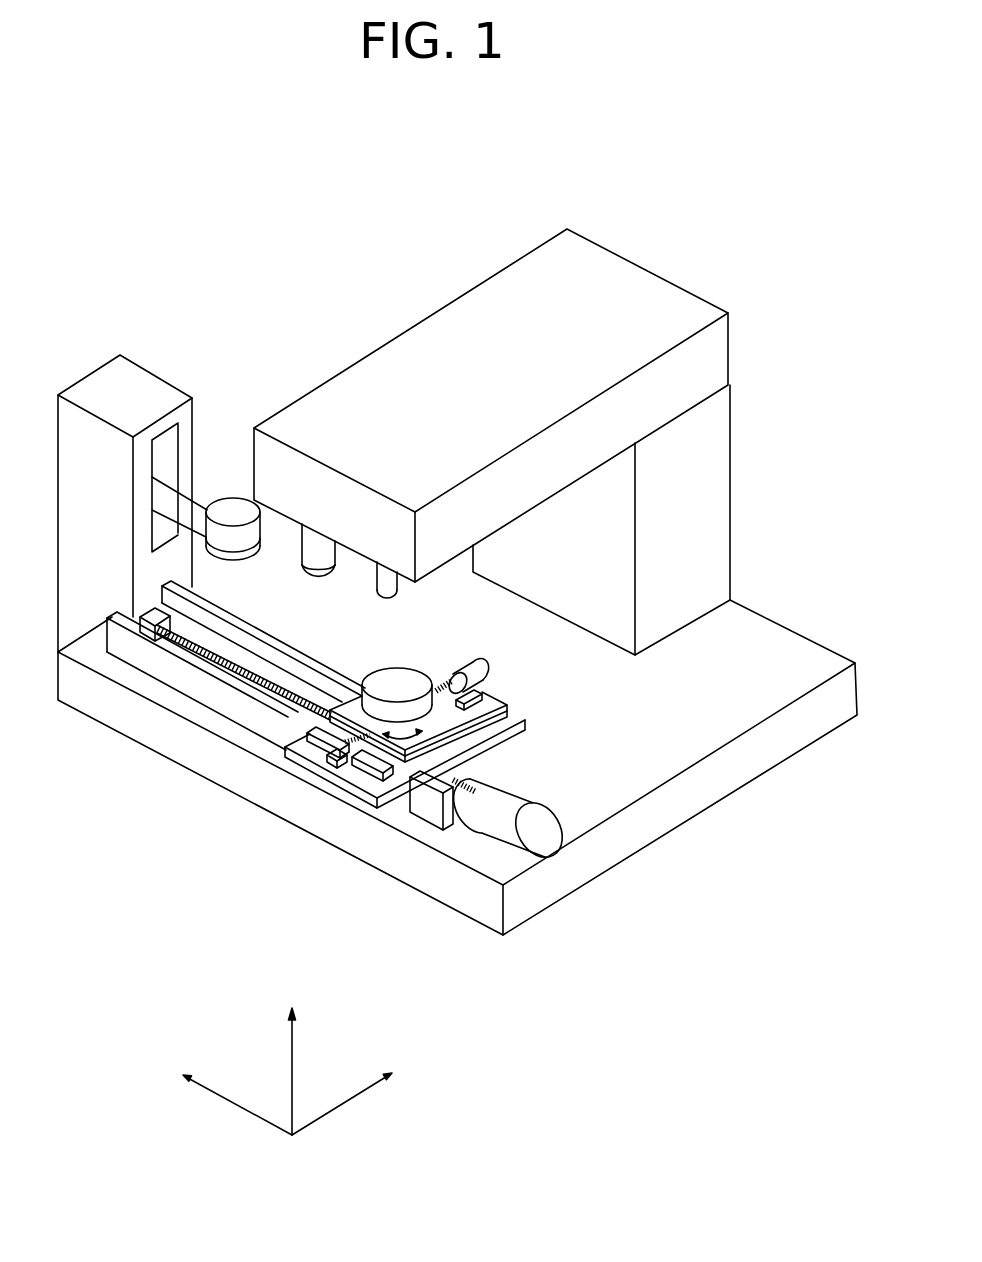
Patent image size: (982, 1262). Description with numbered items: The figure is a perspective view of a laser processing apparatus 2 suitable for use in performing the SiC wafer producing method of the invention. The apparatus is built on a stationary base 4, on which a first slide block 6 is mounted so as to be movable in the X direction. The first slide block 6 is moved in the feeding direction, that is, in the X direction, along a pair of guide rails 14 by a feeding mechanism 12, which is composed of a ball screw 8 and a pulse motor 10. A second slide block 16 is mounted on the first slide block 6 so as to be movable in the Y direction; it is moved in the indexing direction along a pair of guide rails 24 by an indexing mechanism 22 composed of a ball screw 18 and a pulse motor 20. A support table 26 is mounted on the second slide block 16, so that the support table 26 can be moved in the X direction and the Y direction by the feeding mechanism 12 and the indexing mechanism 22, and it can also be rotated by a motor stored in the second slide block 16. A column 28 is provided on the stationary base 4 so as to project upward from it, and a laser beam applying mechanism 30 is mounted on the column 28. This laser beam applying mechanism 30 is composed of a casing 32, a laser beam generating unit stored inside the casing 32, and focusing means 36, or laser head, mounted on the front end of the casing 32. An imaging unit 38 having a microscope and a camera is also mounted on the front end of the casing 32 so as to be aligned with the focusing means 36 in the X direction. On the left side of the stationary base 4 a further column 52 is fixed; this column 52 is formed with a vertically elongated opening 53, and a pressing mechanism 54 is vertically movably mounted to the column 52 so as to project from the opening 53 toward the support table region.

The laser processing apparatus 2 is at (312, 271).
The stationary base 4 is at (655, 770).
The first slide block 6 is at (490, 705).
The ball screw 8 is at (462, 792).
The pulse motor 10 is at (540, 838).
The feeding mechanism 12 is at (465, 978).
The guide rails 14 is at (240, 626).
The second slide block 16 is at (483, 732).
The ball screw 18 is at (323, 780).
The pulse motor 20 is at (468, 672).
The indexing mechanism 22 is at (441, 675).
The guide rails 24 is at (293, 745).
The support table 26 is at (372, 676).
The column 28 is at (738, 460).
The laser beam applying mechanism 30 is at (490, 277).
The casing 32 is at (608, 276).
The focusing means 36 is at (316, 550).
The imaging unit 38 is at (385, 578).
The column 52 is at (103, 372).
The opening 53 is at (165, 438).
The pressing mechanism 54 is at (236, 495).